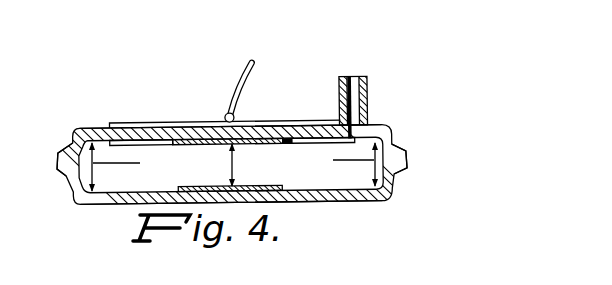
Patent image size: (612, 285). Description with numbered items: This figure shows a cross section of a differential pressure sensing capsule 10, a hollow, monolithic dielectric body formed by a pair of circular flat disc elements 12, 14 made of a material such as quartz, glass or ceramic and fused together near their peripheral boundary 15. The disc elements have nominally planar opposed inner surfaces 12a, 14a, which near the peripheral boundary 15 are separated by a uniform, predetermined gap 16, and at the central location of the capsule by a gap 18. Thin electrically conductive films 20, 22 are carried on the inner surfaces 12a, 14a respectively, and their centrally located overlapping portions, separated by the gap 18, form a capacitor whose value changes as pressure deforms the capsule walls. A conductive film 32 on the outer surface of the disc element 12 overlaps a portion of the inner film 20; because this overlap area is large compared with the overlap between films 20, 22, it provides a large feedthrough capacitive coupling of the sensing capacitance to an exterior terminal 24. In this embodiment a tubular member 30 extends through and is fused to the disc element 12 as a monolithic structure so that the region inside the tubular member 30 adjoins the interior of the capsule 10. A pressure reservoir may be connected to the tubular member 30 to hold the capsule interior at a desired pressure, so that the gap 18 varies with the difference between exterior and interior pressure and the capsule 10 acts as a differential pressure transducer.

The dielectric capsule 10 is at (120, 110).
The disc element 12 is at (282, 127).
The inner surface 12a is at (312, 138).
The disc element 14 is at (81, 204).
The inner surface 14a is at (142, 192).
The peripheral boundary 15 is at (57, 166).
The gap 16 is at (93, 165).
The gap 18 is at (231, 163).
The electrically conductive film 20 is at (239, 144).
The electrically conductive film 22 is at (270, 186).
The exterior terminal 24 is at (257, 74).
The tubular member 30 is at (347, 77).
The conductive film 32 is at (155, 128).